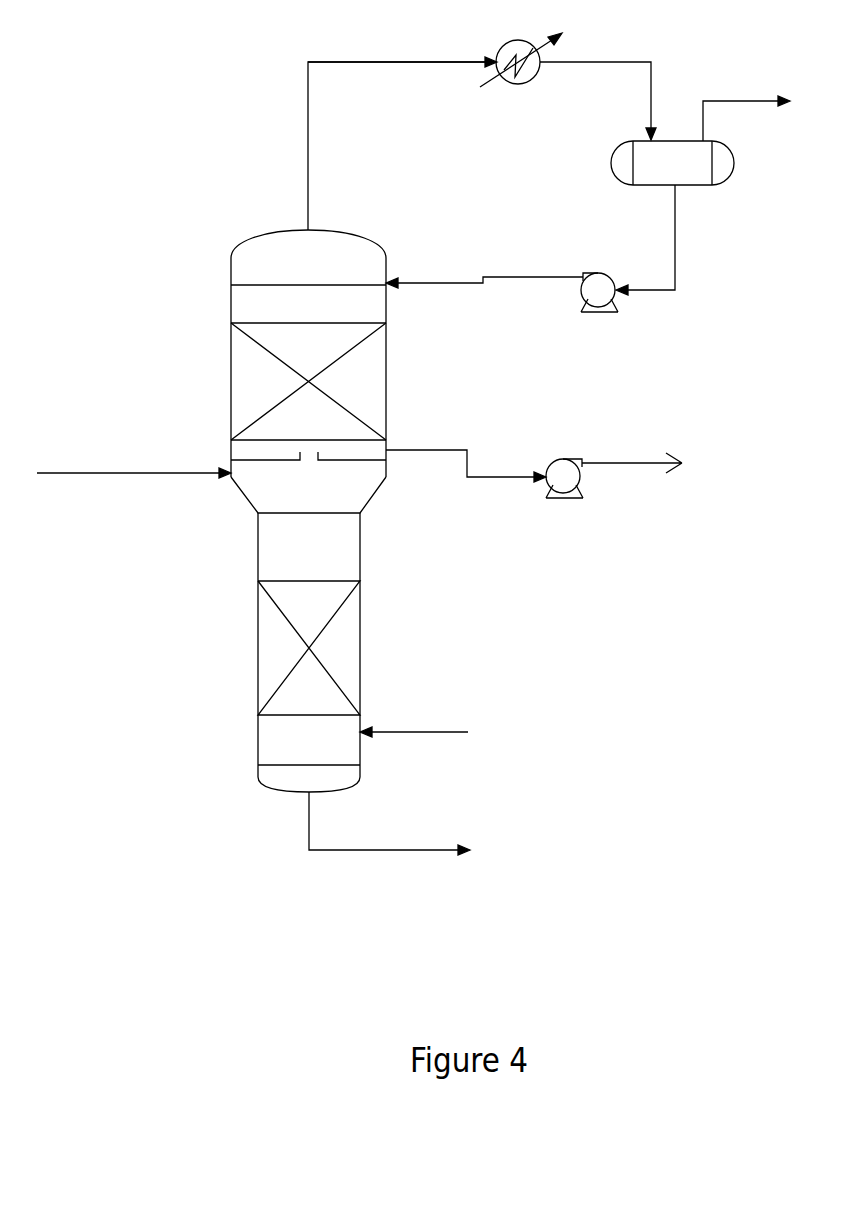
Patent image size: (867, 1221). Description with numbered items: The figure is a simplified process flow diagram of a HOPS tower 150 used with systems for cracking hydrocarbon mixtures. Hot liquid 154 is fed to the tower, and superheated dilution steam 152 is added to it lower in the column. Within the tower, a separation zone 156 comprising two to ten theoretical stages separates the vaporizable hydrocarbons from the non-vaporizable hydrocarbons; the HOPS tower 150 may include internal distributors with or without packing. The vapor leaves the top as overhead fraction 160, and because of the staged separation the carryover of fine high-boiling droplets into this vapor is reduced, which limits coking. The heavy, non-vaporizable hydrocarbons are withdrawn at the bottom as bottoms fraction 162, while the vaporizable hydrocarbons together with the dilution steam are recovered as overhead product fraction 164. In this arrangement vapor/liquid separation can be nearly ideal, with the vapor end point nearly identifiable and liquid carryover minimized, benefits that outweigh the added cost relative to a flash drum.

The HOPS tower 150 is at (174, 236).
The superheated dilution steam 152 is at (433, 738).
The hot liquid 154 is at (88, 483).
The separation zone 156 is at (263, 380).
The overhead fraction 160 is at (428, 62).
The bottoms fraction 162 is at (402, 858).
The overhead product fraction 164 is at (755, 106).